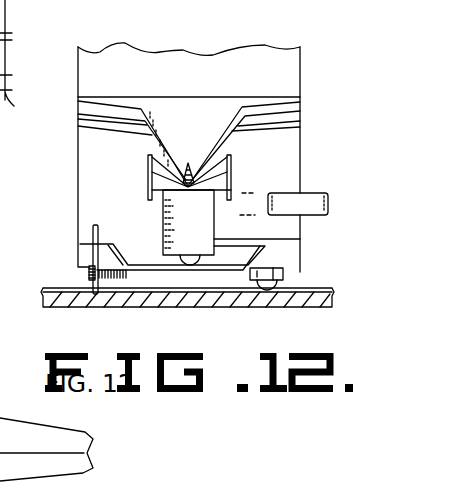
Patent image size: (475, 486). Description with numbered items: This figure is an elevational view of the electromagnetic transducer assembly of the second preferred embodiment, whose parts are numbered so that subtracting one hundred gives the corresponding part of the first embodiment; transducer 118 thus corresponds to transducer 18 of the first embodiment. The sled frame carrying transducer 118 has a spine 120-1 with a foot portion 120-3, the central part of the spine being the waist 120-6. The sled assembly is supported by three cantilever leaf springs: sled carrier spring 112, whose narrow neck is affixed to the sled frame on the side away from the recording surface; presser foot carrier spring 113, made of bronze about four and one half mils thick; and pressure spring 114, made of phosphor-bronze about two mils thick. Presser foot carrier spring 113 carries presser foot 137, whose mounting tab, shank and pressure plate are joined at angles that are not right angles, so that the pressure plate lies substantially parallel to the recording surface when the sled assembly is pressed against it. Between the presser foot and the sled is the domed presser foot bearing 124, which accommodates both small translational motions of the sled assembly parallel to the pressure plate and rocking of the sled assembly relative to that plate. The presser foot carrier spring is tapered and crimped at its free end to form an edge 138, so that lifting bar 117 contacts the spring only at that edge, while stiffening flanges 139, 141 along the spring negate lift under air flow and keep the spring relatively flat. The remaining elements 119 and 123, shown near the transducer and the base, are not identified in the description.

The sled carrier spring 112 is at (203, 266).
The presser foot carrier spring 113 is at (225, 150).
The pressure spring 114 is at (203, 106).
The lifting bar 117 is at (312, 199).
The transducer 118 is at (83, 248).
The fastener 119 is at (88, 277).
The spine 120-1 is at (8, 3).
The foot portion 120-3 is at (5, 75).
The waist 120-6 is at (152, 272).
The roller block 123 is at (282, 287).
The presser foot bearing 124 is at (188, 263).
The presser foot 137 is at (163, 216).
The edge 138 is at (188, 191).
The stiffening flange 139 is at (148, 197).
The stiffening flange 141 is at (240, 189).
The transducer 18 is at (7, 143).